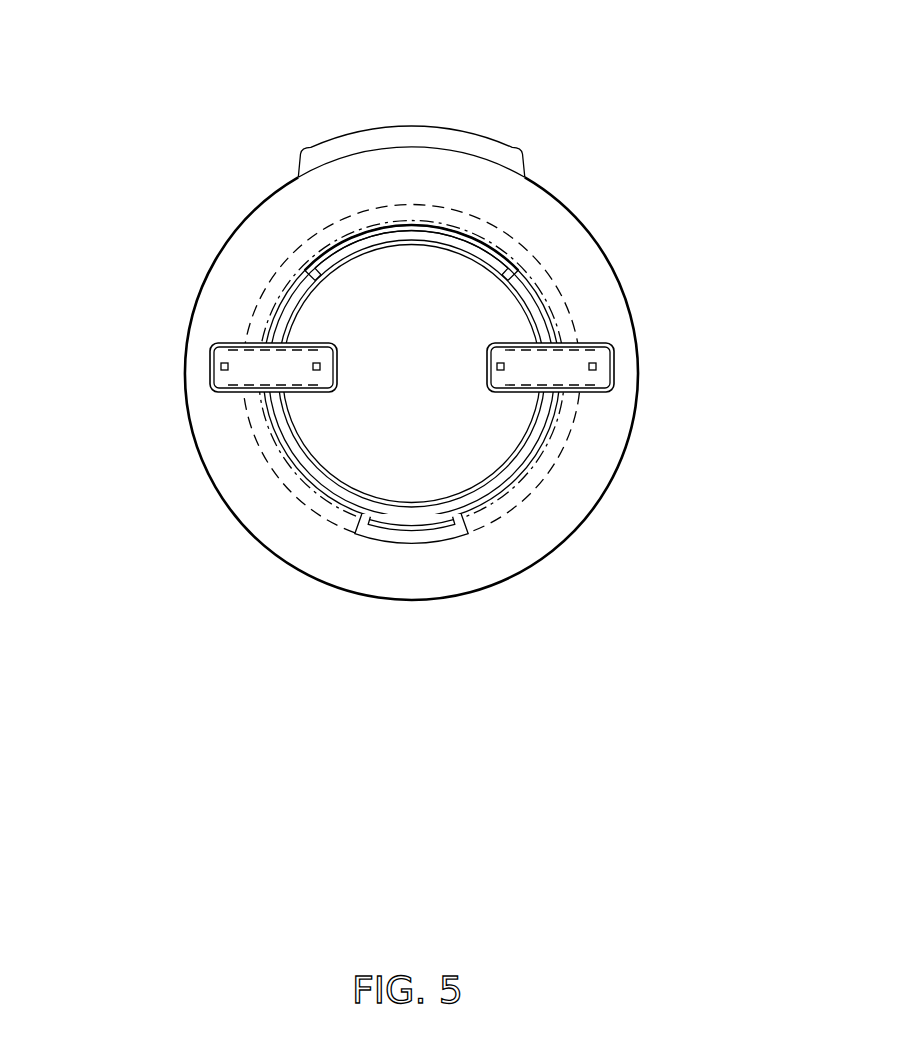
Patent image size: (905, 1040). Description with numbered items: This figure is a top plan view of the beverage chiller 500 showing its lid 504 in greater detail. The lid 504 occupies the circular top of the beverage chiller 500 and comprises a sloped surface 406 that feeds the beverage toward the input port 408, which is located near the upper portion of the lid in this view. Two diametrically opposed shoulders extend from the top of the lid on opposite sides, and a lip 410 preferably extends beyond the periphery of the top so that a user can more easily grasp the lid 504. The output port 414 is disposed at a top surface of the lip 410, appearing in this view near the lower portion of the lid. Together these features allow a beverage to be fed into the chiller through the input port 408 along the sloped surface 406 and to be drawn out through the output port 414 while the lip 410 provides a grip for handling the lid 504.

The beverage chiller 500 is at (427, 300).
The lid 504 is at (558, 247).
The sloped surface 406 is at (363, 320).
The input port 408 is at (364, 240).
The lip 410 is at (467, 140).
The output port 414 is at (465, 527).